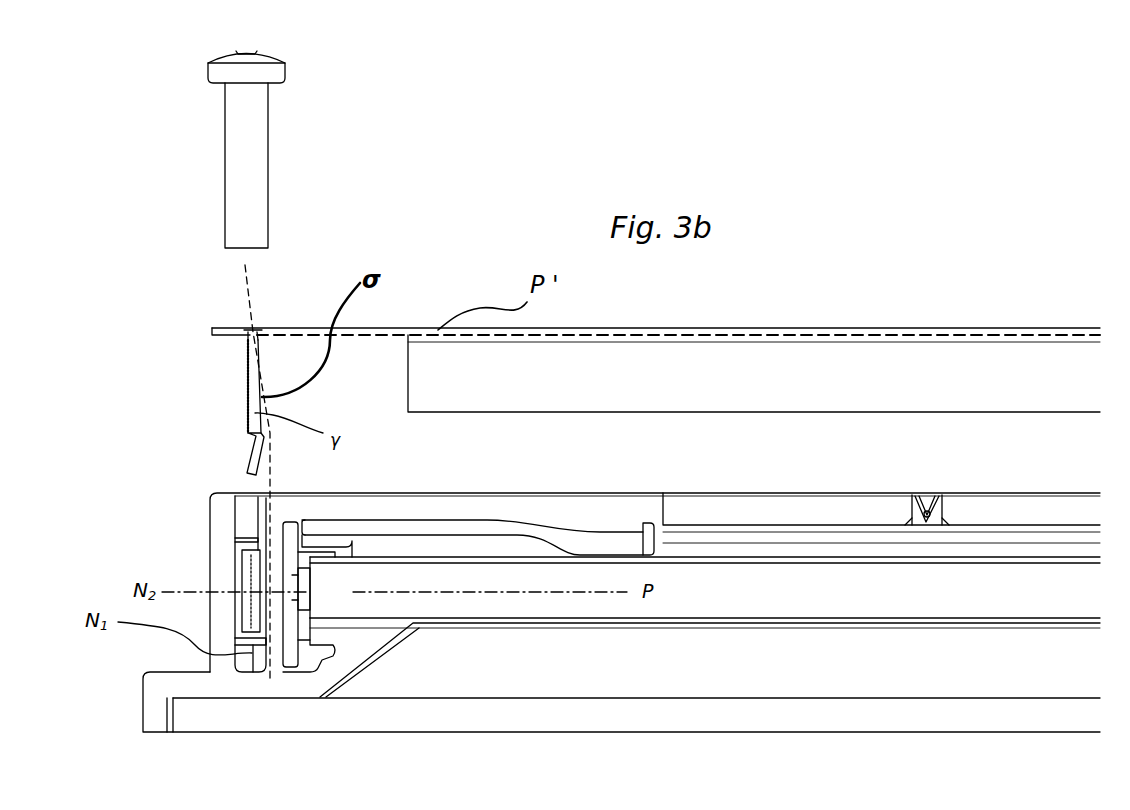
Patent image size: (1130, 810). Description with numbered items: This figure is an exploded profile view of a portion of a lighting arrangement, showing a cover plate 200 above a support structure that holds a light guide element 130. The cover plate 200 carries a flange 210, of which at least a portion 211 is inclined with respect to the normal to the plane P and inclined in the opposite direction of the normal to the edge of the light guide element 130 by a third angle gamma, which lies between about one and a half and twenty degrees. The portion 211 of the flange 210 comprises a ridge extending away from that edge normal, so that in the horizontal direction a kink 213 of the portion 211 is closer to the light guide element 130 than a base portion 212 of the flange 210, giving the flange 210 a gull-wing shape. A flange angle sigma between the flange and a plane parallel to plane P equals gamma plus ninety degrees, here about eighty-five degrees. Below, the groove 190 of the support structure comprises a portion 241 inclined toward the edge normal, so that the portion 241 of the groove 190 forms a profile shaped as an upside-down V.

The cover plate 200 is at (772, 328).
The flange 210 is at (162, 373).
The portion of the flange 211 is at (250, 432).
The base portion of the flange 212 is at (250, 340).
The kink 213 is at (255, 433).
The portion of the groove 241 is at (258, 550).
The groove 190 is at (248, 590).
The light guide element 130 is at (680, 623).